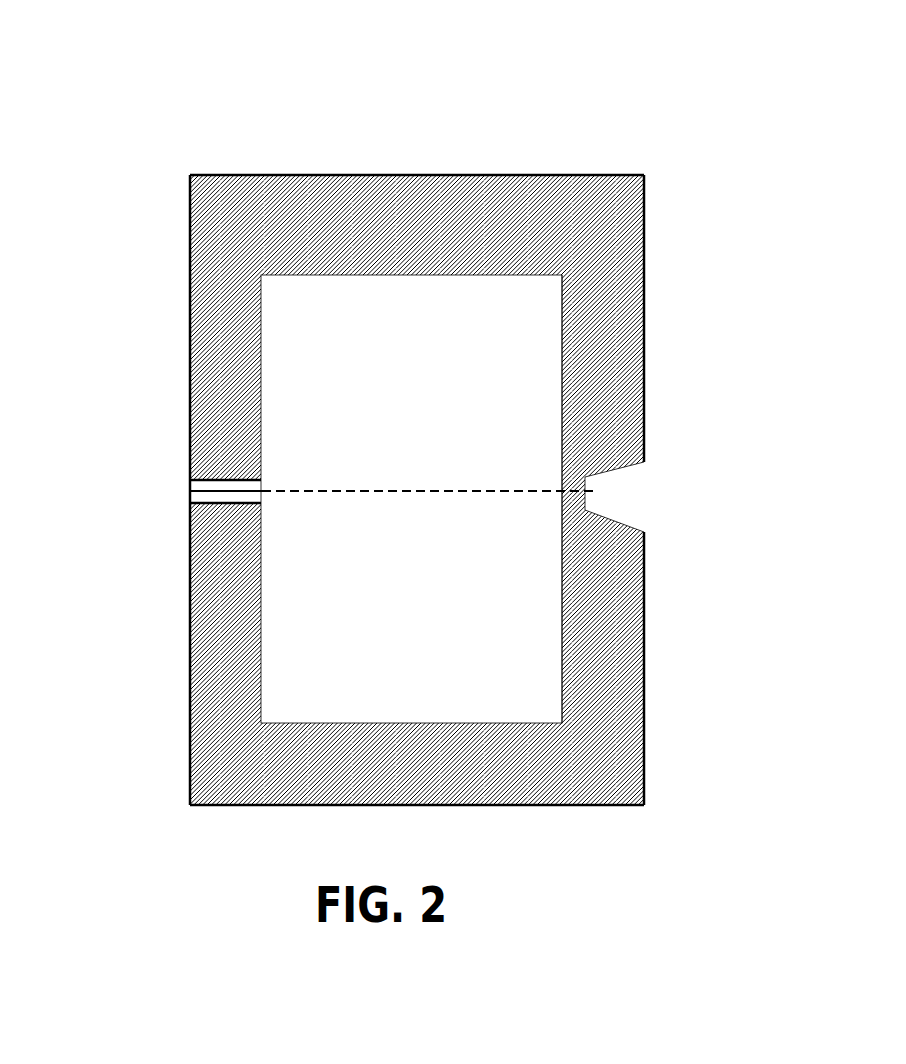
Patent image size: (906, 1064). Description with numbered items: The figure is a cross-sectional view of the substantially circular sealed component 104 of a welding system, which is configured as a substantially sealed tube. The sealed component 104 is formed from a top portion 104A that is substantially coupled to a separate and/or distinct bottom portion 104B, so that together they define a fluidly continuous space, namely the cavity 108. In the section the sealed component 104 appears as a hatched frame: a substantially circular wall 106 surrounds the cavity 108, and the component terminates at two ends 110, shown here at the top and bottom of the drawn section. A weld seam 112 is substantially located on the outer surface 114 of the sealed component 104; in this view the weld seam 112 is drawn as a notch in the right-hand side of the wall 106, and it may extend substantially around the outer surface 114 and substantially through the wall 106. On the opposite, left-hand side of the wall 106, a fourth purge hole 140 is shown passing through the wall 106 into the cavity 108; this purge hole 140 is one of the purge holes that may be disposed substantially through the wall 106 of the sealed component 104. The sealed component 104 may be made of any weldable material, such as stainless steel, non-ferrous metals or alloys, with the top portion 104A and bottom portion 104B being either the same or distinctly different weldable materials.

The substantially circular sealed component 104 is at (431, 150).
The top portion 104A is at (272, 213).
The bottom portion 104B is at (212, 713).
The substantially circular wall 106 is at (600, 340).
The cavity 108 is at (430, 393).
The ends 110 is at (575, 175).
The weld seam 112 is at (645, 499).
The outer surface 114 is at (190, 358).
The fourth purge hole 140 is at (200, 481).